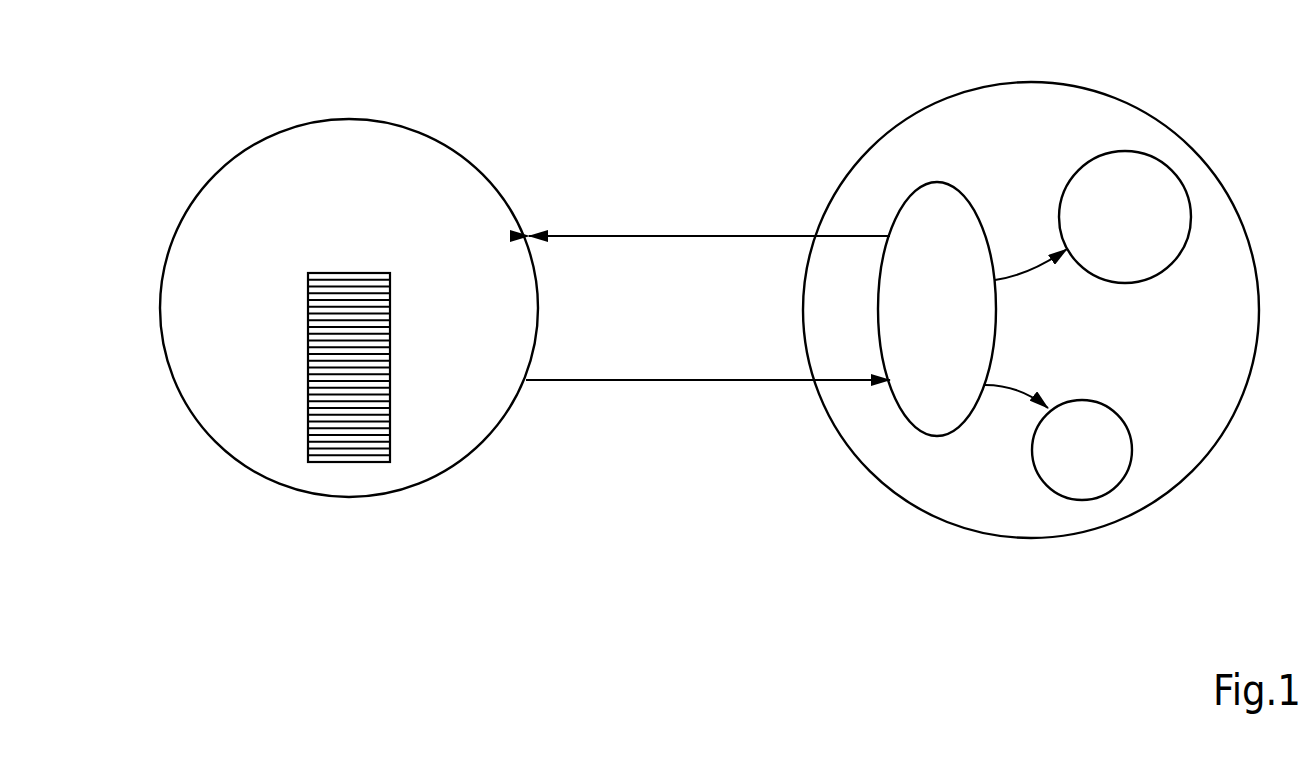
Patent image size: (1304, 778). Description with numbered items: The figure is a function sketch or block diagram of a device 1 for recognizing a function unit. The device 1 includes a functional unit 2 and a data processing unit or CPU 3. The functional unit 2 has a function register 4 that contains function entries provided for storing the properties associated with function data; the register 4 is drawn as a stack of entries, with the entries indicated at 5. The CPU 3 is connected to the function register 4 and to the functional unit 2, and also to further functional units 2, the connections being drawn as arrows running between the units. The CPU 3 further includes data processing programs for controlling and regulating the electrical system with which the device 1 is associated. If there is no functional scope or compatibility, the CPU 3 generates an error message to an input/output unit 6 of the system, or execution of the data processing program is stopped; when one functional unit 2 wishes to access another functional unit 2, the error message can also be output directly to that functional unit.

The device 1 is at (454, 557).
The functional unit 2 is at (431, 133).
The data processing unit or CPU 3 is at (938, 181).
The function register 4 is at (310, 272).
The stored data records 5 is at (352, 247).
The input/output unit 6 is at (1095, 499).